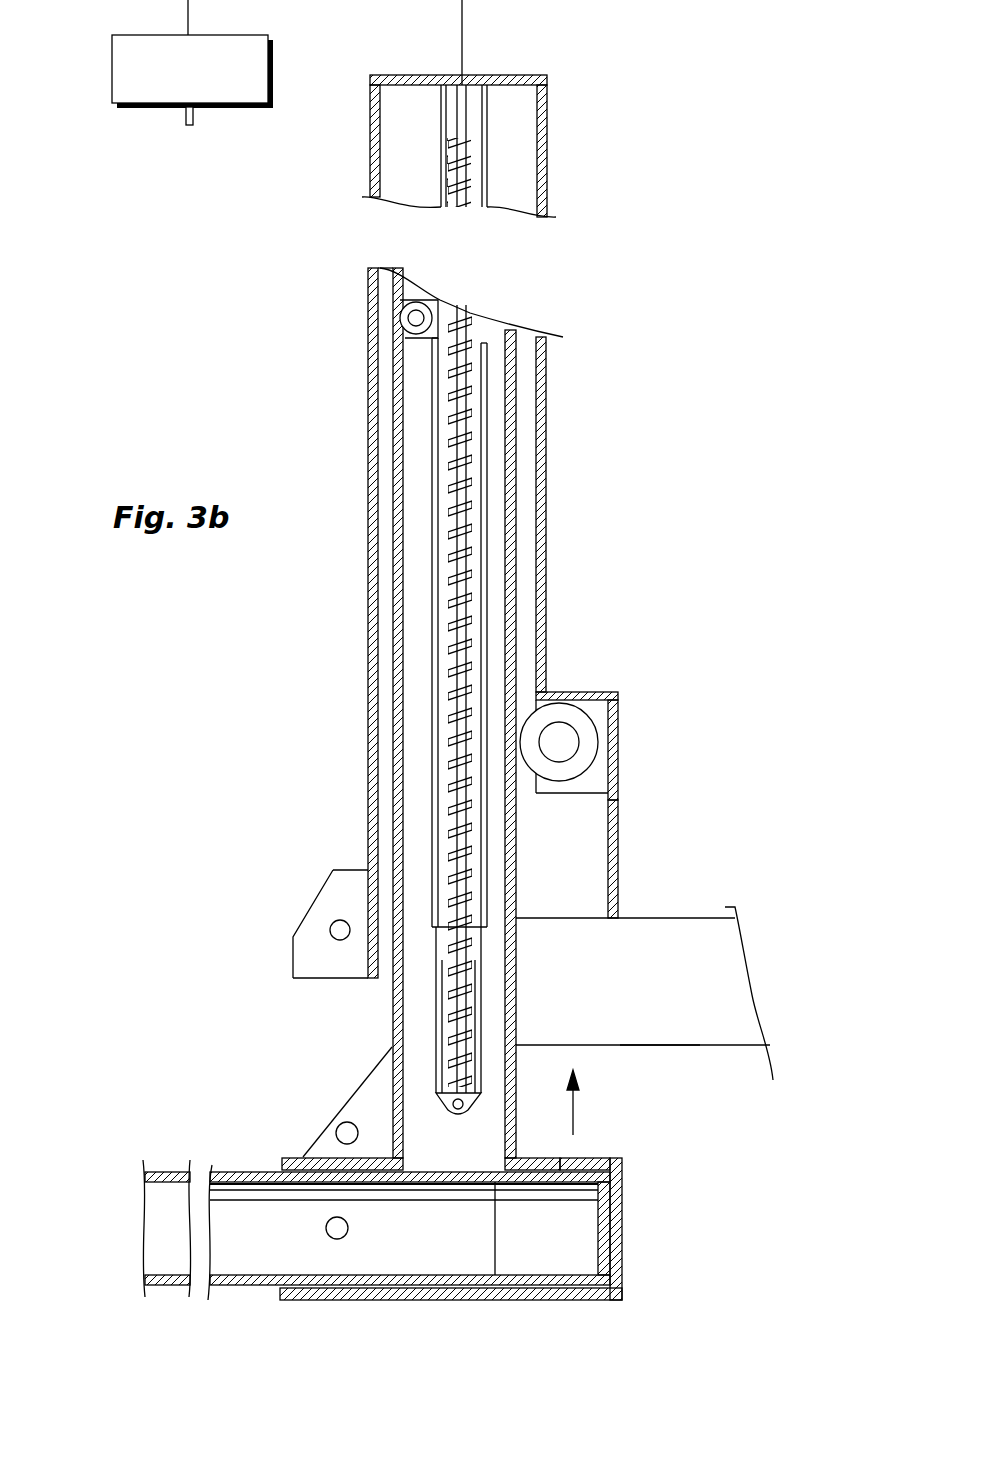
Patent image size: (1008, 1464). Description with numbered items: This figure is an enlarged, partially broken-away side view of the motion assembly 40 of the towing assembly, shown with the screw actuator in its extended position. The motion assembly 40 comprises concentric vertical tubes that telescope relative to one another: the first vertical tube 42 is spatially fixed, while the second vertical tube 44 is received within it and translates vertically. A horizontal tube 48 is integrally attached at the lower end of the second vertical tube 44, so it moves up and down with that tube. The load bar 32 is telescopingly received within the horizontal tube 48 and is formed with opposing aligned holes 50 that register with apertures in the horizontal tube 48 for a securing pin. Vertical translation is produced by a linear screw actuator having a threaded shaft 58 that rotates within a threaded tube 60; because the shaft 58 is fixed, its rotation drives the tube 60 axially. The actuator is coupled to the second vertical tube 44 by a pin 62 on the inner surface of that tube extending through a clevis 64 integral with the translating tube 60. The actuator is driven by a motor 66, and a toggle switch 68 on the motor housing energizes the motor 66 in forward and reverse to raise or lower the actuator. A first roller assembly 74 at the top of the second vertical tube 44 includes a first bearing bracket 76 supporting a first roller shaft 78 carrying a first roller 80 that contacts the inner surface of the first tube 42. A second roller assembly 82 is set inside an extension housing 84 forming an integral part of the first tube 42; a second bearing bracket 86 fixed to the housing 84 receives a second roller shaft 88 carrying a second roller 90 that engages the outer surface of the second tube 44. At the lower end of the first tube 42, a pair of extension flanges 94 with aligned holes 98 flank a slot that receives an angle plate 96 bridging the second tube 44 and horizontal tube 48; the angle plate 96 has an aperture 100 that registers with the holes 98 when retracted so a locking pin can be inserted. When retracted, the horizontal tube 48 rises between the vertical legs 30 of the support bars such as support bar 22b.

The support bar 22b is at (697, 1023).
The vertical leg 30 is at (662, 943).
The load bar 32 is at (163, 1205).
The motion assembly 40 is at (648, 426).
The first vertical tube 42 is at (368, 680).
The second vertical tube 44 is at (518, 555).
The horizontal tube 48 is at (400, 1300).
The holes 50 is at (330, 1235).
The threaded shaft 58 is at (473, 180).
The threaded tube 60 is at (455, 760).
The pin 62 is at (460, 1110).
The clevis 64 is at (441, 1097).
The motor 66 is at (120, 68).
The toggle switch 68 is at (193, 125).
The first roller assembly 74 is at (335, 308).
The first bearing bracket 76 is at (440, 300).
The first roller shaft 78 is at (410, 313).
The first roller 80 is at (408, 336).
The second roller assembly 82 is at (626, 768).
The extension housing 84 is at (618, 848).
The second bearing bracket 86 is at (600, 708).
The second roller shaft 88 is at (559, 735).
The second roller 90 is at (557, 772).
The extension flanges 94 is at (300, 962).
The angle plate 96 is at (372, 1102).
The holes 98 is at (340, 920).
The aperture 100 is at (345, 1123).